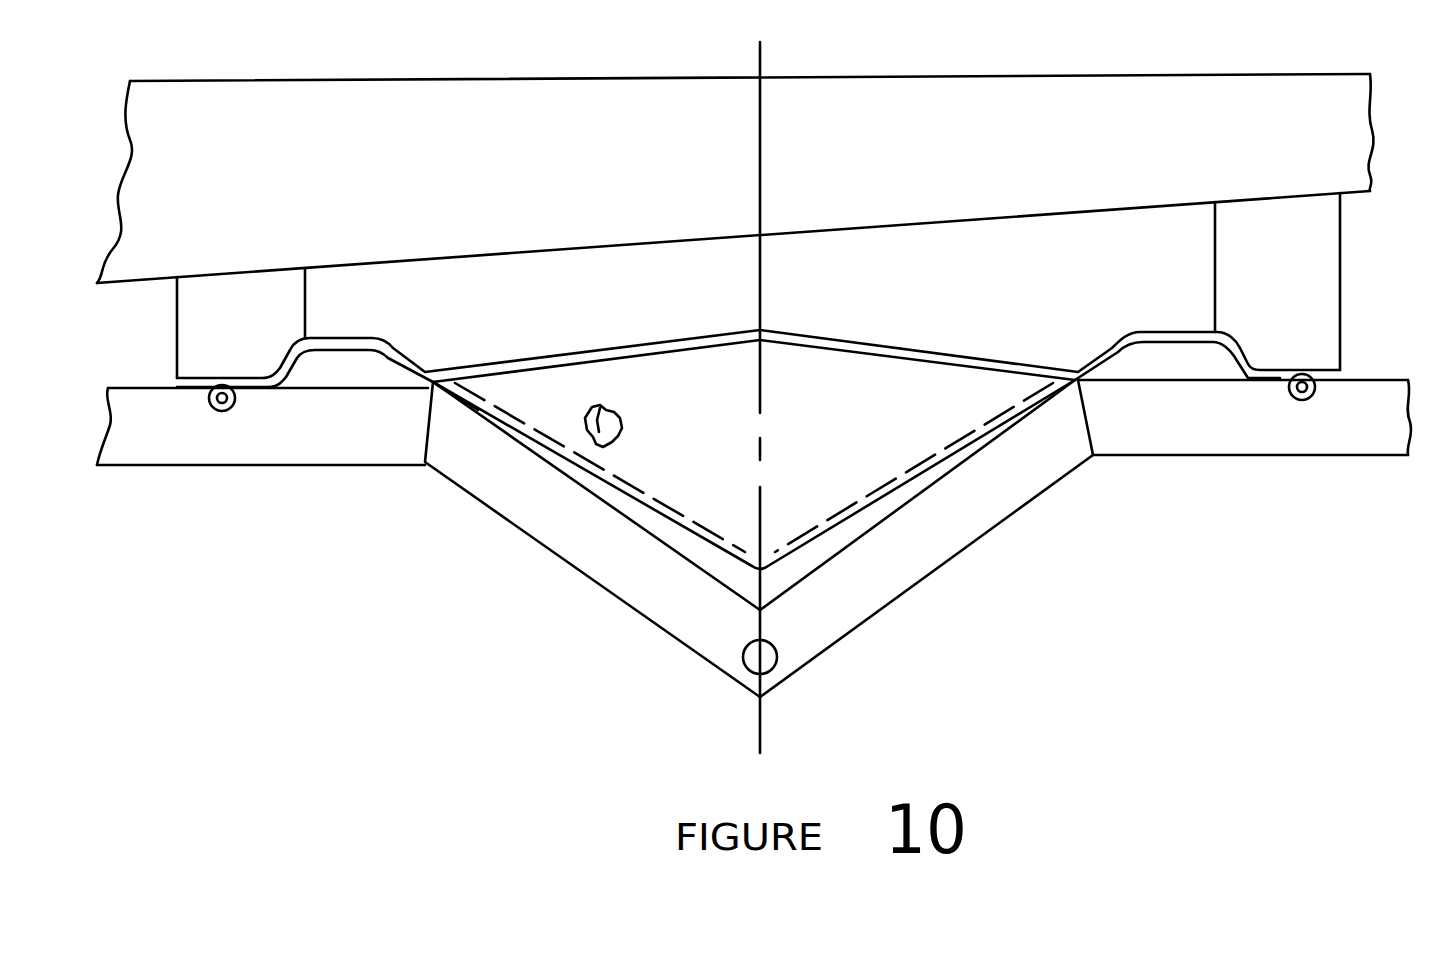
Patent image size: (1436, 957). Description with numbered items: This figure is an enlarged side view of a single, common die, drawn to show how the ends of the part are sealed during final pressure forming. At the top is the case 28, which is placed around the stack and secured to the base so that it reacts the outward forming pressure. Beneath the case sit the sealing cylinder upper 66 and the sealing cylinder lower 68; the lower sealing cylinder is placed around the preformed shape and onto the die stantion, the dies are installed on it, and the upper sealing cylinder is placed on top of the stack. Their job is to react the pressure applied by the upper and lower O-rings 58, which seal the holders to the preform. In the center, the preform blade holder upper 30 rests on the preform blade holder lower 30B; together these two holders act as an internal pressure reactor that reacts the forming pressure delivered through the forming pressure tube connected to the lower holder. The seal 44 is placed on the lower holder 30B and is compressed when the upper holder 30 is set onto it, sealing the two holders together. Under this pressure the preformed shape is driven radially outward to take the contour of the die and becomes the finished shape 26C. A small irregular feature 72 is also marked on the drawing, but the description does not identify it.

The case 28 is at (1093, 74).
The sealing cylinder upper 66 is at (177, 335).
The sealing cylinder lower 68 is at (1340, 257).
The finished shape 26C is at (758, 449).
The preform blade holder upper 30 is at (592, 578).
The preform blade holder lower 30B is at (947, 560).
The O-ring holder to preform 58 is at (222, 411).
The gap / spacer element 72 is at (593, 437).
The seal upper holder to lower 44 is at (773, 669).